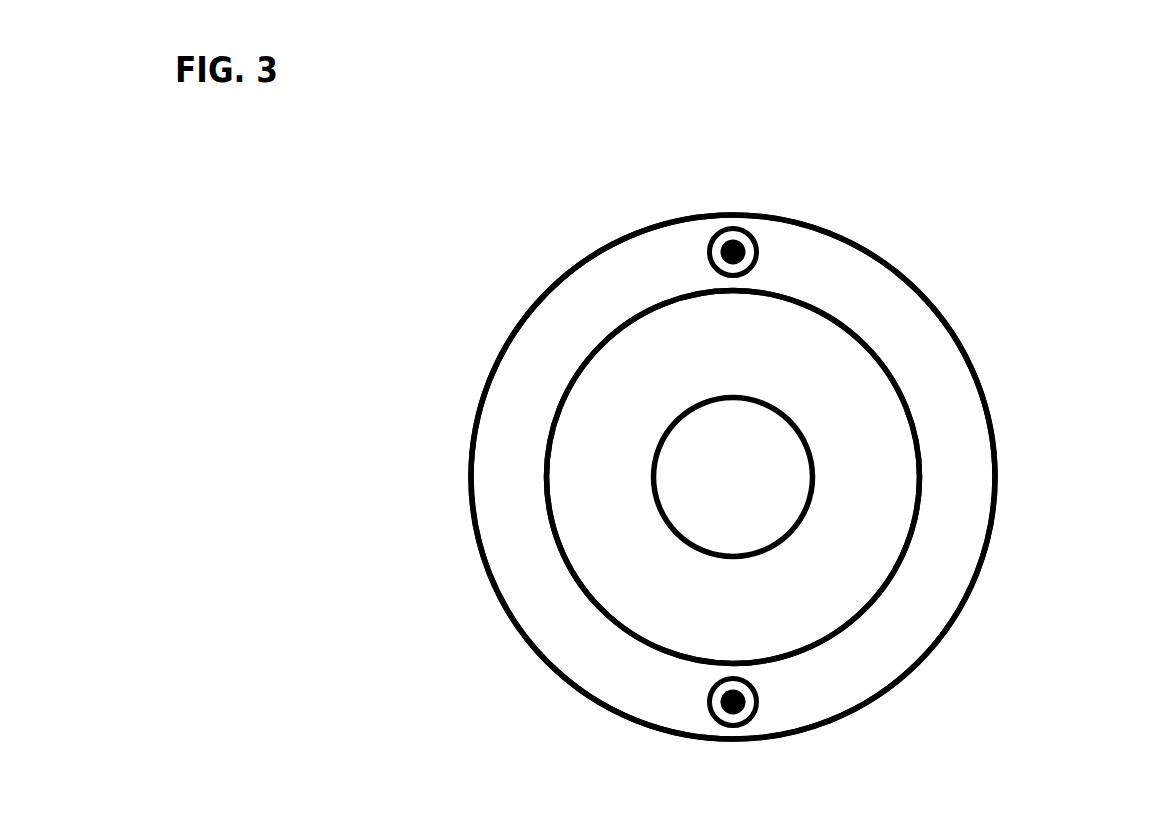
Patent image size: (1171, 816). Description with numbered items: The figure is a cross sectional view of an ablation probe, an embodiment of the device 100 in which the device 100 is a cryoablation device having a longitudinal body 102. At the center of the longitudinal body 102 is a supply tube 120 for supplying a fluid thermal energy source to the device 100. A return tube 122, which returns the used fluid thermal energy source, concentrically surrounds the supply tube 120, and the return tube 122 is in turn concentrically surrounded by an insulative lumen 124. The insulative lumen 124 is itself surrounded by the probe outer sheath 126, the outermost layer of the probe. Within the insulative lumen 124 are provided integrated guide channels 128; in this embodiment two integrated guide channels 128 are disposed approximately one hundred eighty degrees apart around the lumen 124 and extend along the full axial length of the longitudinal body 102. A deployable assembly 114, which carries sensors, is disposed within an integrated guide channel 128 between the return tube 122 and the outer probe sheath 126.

The device 100 is at (588, 160).
The longitudinal body 102 is at (965, 615).
The deployable assembly 114 is at (733, 250).
The supply tube 120 is at (752, 489).
The return tube 122 is at (888, 527).
The insulative lumen 124 is at (963, 564).
The probe outer sheath 126 is at (963, 342).
The integrated guide channel 128 is at (708, 253).